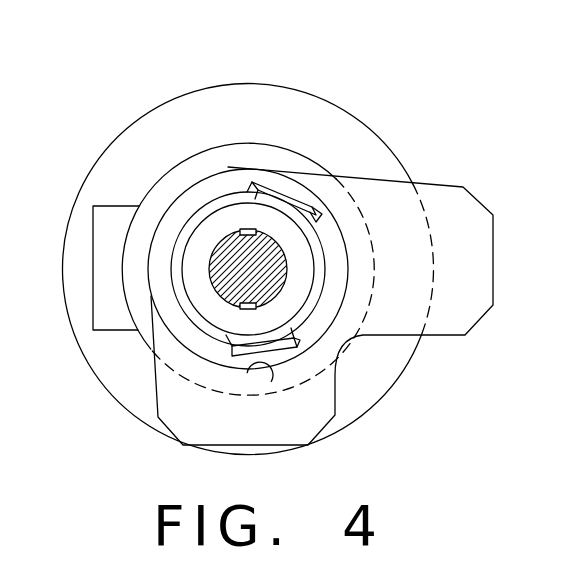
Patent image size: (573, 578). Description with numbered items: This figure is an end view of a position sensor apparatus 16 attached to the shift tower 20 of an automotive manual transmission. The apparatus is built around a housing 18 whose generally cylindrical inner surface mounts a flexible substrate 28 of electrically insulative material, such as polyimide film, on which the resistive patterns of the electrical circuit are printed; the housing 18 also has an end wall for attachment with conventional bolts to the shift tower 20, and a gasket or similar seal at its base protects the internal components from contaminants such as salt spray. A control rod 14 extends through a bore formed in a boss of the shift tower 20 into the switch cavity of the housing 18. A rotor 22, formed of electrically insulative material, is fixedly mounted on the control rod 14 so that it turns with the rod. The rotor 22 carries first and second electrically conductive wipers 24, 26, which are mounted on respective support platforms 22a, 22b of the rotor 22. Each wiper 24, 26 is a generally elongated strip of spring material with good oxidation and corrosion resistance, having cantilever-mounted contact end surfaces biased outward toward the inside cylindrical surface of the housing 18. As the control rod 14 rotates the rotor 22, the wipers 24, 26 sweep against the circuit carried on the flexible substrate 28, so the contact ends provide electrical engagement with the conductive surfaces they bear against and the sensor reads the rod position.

The control rod 14 is at (268, 288).
The position sensor apparatus 16 is at (214, 62).
The housing 18 is at (190, 170).
The shift tower 20 is at (313, 394).
The rotor 22 is at (170, 220).
The support platform 22a is at (247, 192).
The support platform 22b is at (205, 358).
The first electrically conductive wiper 24 is at (313, 210).
The second electrically conductive wiper 26 is at (300, 340).
The flexible substrate 28 is at (272, 362).